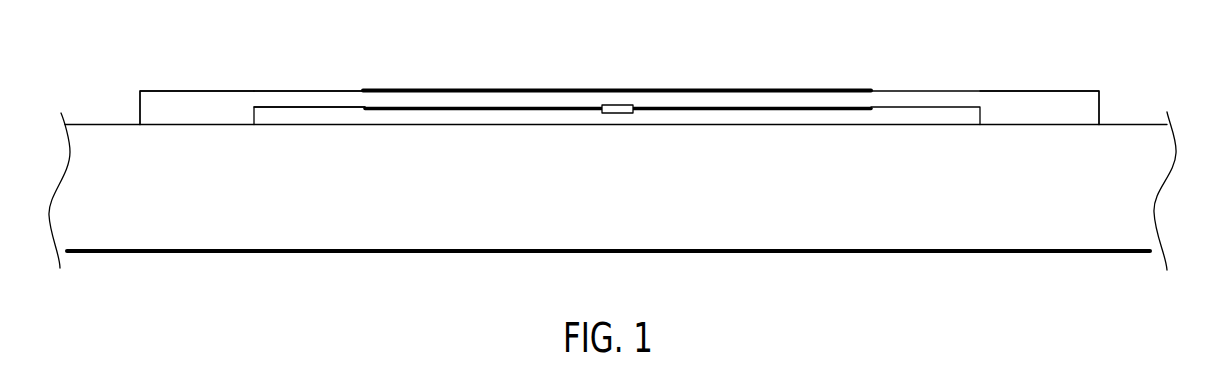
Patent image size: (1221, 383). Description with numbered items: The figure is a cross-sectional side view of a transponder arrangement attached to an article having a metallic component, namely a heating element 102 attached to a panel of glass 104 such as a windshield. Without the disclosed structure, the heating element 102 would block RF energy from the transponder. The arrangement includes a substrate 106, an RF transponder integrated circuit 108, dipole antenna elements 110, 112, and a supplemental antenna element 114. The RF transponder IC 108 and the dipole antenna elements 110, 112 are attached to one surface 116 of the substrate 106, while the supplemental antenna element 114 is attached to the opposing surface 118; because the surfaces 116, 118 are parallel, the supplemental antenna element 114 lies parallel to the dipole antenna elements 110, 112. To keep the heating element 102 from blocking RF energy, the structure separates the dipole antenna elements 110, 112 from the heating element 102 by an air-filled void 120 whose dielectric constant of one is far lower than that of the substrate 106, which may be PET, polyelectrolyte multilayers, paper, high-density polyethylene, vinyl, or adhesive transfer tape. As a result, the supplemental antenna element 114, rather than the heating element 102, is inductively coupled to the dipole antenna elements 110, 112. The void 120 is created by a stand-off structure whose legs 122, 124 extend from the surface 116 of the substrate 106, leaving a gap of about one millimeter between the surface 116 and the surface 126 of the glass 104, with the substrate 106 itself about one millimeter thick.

The heating element 102 is at (397, 253).
The panel of glass 104 is at (182, 190).
The substrate 106 is at (342, 102).
The RF transponder integrated circuit 108 is at (613, 114).
The dipole antenna element 110 is at (489, 110).
The dipole antenna element 112 is at (750, 111).
The supplemental antenna element 114 is at (564, 88).
The surface of the substrate 116 is at (268, 108).
The opposing surface of the substrate 118 is at (240, 93).
The void 120 is at (893, 117).
The leg 122 is at (193, 110).
The leg 124 is at (1043, 110).
The surface of the glass 126 is at (302, 125).